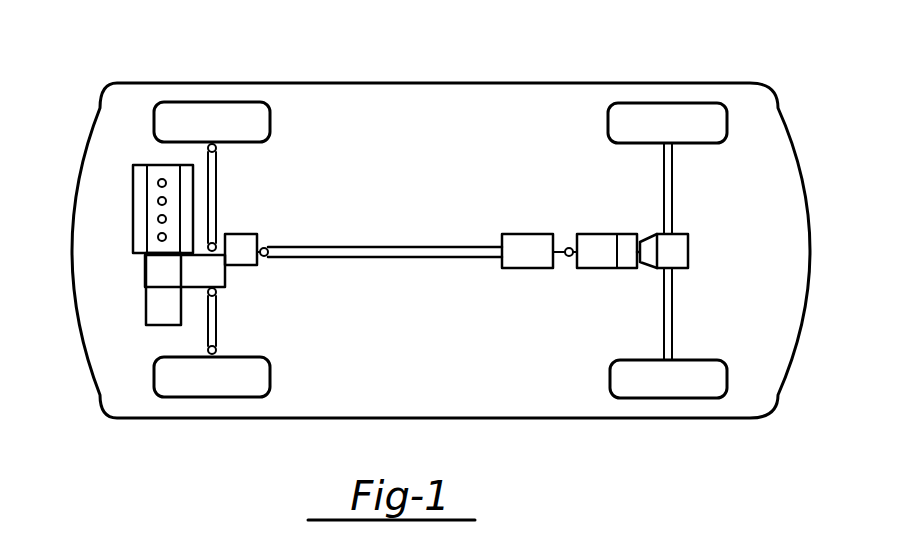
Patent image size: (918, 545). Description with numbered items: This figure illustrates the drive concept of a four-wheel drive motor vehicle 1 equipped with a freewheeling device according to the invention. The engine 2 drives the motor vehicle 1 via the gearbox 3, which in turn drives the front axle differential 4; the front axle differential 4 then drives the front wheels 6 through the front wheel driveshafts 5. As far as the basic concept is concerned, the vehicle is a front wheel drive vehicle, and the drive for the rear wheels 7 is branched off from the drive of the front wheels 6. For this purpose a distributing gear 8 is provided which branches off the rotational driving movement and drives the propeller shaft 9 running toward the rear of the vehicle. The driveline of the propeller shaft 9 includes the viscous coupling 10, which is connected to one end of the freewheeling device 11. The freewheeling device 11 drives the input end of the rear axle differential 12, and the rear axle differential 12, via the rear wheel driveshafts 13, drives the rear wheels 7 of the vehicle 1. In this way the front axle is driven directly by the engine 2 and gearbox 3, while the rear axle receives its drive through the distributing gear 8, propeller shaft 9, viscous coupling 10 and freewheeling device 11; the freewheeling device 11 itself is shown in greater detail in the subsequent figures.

The motor vehicle 1 is at (332, 120).
The engine 2 is at (150, 242).
The gearbox 3 is at (165, 298).
The front axle differential 4 is at (200, 272).
The front wheel driveshafts 5 is at (215, 190).
The front wheels 6 is at (210, 373).
The rear wheels 7 is at (645, 125).
The distributing gear 8 is at (242, 252).
The propeller shaft 9 is at (422, 248).
The viscous coupling 10 is at (528, 253).
The freewheeling device 11 is at (603, 253).
The rear axle differential 12 is at (687, 255).
The rear wheel driveshafts 13 is at (667, 220).